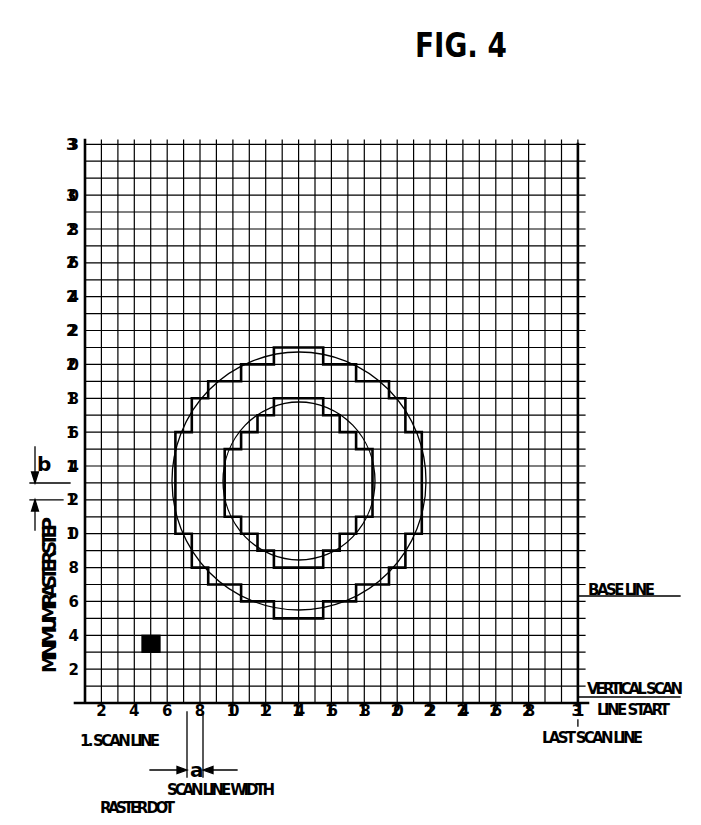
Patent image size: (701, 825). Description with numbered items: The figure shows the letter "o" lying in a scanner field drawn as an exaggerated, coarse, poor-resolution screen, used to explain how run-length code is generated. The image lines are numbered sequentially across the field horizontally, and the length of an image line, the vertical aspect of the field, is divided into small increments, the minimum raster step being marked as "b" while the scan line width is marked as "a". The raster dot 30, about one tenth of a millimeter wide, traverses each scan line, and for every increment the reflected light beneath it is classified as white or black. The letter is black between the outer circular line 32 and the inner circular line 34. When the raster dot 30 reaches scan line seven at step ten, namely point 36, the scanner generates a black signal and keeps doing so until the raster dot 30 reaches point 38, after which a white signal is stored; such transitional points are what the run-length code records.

The raster dot 30 is at (157, 652).
The circular line 32 is at (372, 380).
The circular line 34 is at (356, 438).
The point 36 is at (216, 518).
The point 38 is at (190, 428).